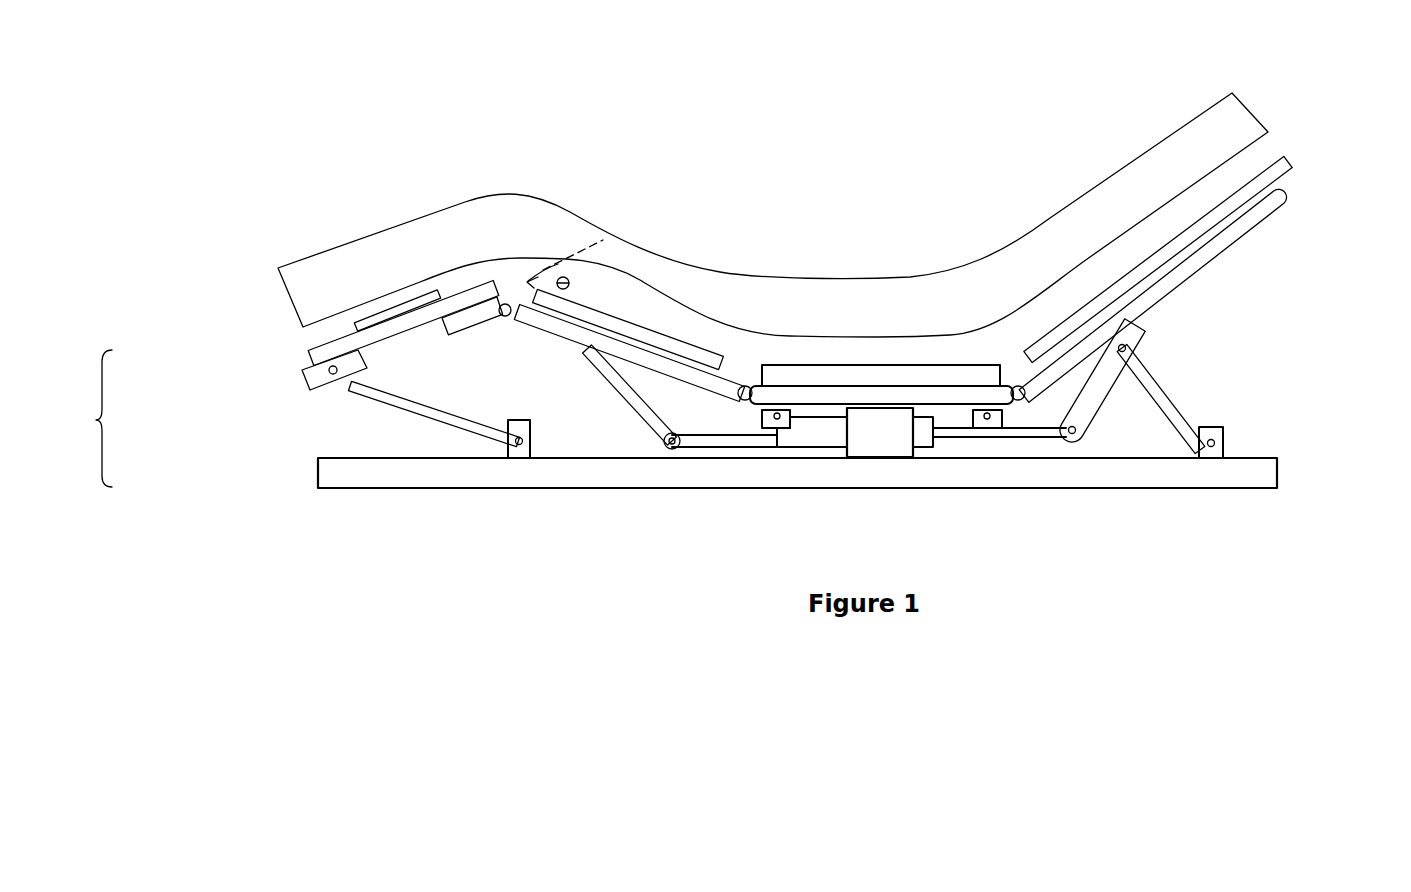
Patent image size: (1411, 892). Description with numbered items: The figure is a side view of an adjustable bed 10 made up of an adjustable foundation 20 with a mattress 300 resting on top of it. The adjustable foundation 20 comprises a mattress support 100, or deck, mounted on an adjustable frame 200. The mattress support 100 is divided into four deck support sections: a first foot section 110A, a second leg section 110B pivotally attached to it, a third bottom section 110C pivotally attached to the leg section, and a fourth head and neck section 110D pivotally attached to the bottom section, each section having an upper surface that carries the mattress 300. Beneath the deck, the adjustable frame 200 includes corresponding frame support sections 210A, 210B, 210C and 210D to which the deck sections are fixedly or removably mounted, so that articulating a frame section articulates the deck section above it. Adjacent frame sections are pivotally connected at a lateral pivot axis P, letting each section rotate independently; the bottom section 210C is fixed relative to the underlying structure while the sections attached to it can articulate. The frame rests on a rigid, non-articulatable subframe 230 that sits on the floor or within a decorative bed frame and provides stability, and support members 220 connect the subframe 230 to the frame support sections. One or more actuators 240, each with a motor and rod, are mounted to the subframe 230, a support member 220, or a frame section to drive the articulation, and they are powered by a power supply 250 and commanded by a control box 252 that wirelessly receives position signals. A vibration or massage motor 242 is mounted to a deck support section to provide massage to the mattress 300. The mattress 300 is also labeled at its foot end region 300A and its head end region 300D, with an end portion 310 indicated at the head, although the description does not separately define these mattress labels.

The adjustable bed 10 is at (210, 145).
The adjustable foundation 20 is at (83, 418).
The mattress support 100 is at (754, 285).
The first (foot) support section 110A is at (307, 356).
The second (leg) support section 110B is at (621, 322).
The third (bottom) support section 110C is at (823, 378).
The fourth (head/neck) support section 110D is at (1295, 160).
The adjustable frame 200 is at (748, 380).
The first (foot) frame support section 210A is at (447, 336).
The second (leg) frame support section 210B is at (573, 345).
The third (bottom) frame support section 210C is at (903, 395).
The fourth (head/neck) frame support section 210D is at (1285, 198).
The support member 220 is at (406, 420).
The subframe 230 is at (1281, 470).
The actuator 240 is at (798, 443).
The vibration or massage motor 242 is at (440, 290).
The power supply 250 is at (870, 438).
The control box 252 is at (923, 432).
The mattress 300 is at (750, 193).
The head cushion section 300A is at (296, 243).
The leg cushion section 300D is at (1268, 82).
The cushion end 310 is at (1203, 178).
The pivot axis P is at (505, 318).